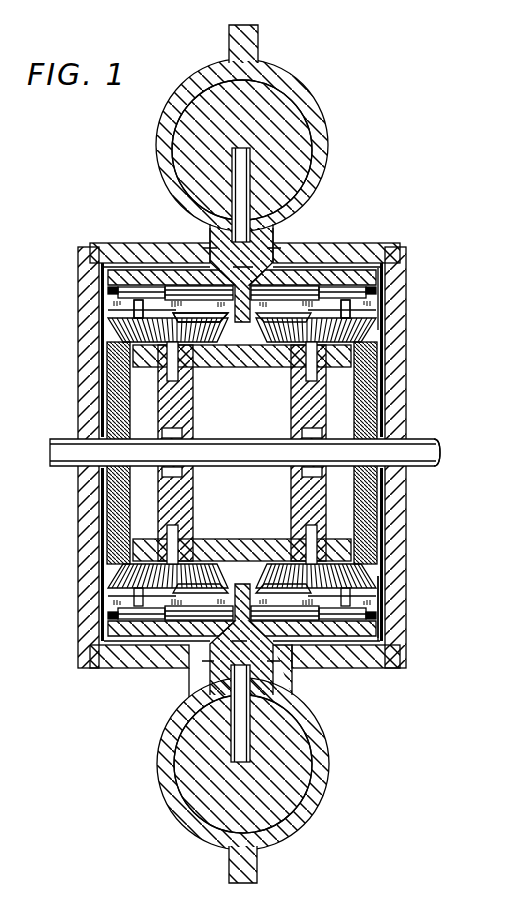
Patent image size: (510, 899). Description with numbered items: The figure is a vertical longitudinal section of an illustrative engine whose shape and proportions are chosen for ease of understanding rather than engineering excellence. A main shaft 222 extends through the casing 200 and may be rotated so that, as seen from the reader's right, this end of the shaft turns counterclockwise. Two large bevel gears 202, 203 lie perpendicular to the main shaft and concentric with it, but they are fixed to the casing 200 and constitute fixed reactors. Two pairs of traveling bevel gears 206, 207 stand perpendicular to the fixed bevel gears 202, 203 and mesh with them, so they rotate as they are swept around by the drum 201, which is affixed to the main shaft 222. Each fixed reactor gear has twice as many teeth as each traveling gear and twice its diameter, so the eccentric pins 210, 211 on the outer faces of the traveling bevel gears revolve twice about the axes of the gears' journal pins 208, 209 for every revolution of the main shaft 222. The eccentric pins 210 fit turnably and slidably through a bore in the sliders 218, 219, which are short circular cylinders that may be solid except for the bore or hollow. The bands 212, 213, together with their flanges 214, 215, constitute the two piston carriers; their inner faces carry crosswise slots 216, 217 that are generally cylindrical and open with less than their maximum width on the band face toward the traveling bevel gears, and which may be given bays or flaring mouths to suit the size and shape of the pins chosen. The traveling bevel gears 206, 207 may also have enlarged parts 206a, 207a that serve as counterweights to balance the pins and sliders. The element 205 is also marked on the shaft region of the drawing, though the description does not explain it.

The casing 200 is at (368, 243).
The drum 201 is at (208, 372).
The large bevel gear 202 is at (100, 400).
The large bevel gear 203 is at (380, 404).
The shaft 205 is at (255, 440).
The traveling bevel gear 206 is at (125, 336).
The enlarged part 206a is at (205, 310).
The traveling bevel gear 207 is at (376, 334).
The enlarged part 207a is at (372, 307).
The journal pin 208 is at (177, 384).
The journal pin 209 is at (312, 384).
The eccentric pin 210 is at (132, 317).
The eccentric pin 211 is at (372, 322).
The band 212 is at (136, 272).
The band 213 is at (316, 276).
The flange 214 is at (216, 208).
The flange 215 is at (264, 216).
The slot 216 is at (193, 646).
The slot 217 is at (378, 624).
The slider 218 is at (107, 290).
The slider 219 is at (378, 270).
The main shaft 222 is at (422, 461).